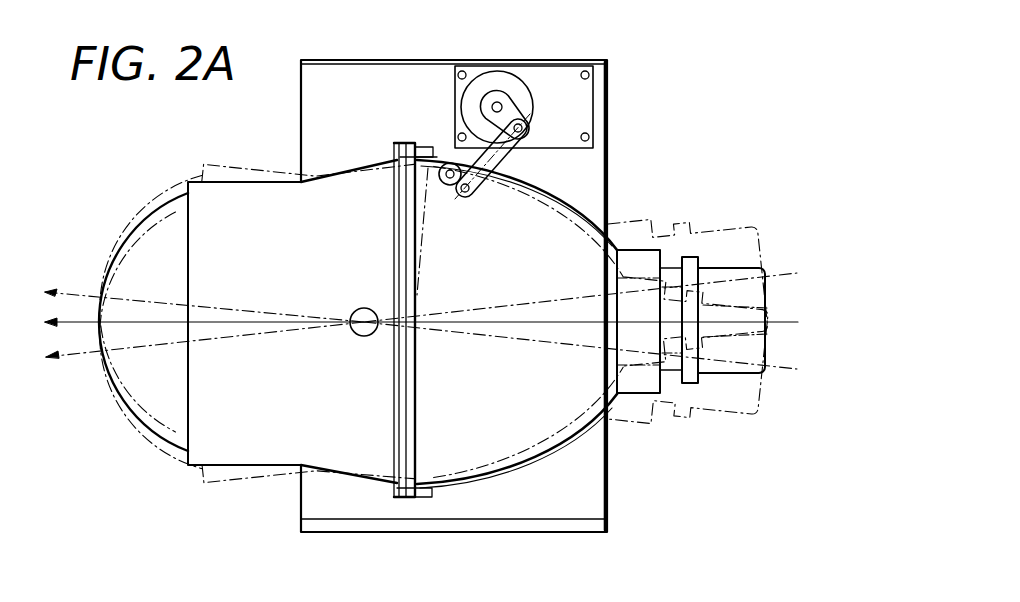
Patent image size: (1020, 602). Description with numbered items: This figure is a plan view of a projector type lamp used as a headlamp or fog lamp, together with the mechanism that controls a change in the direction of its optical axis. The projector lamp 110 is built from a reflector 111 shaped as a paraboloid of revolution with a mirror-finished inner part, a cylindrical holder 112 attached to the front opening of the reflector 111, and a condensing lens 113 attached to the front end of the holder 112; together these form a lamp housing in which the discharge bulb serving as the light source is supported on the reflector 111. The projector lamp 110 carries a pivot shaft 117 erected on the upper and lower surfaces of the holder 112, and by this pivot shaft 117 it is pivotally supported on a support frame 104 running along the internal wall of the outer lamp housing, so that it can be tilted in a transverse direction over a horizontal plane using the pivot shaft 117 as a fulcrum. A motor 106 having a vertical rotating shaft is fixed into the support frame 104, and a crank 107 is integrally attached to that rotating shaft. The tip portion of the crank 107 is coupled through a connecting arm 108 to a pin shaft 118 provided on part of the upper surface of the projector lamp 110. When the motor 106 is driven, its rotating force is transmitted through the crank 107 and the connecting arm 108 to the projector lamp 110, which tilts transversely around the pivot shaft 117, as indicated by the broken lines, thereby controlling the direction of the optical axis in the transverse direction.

The support frame 104 is at (420, 525).
The motor 106 is at (515, 85).
The crank 107 is at (512, 110).
The connecting arm 108 is at (500, 145).
The projector lamp 110 is at (235, 468).
The reflector 111 is at (503, 440).
The cylindrical holder 112 is at (362, 462).
The condensing lens 113 is at (158, 412).
The pivot shaft 117 is at (363, 330).
The pin shaft 118 is at (450, 166).